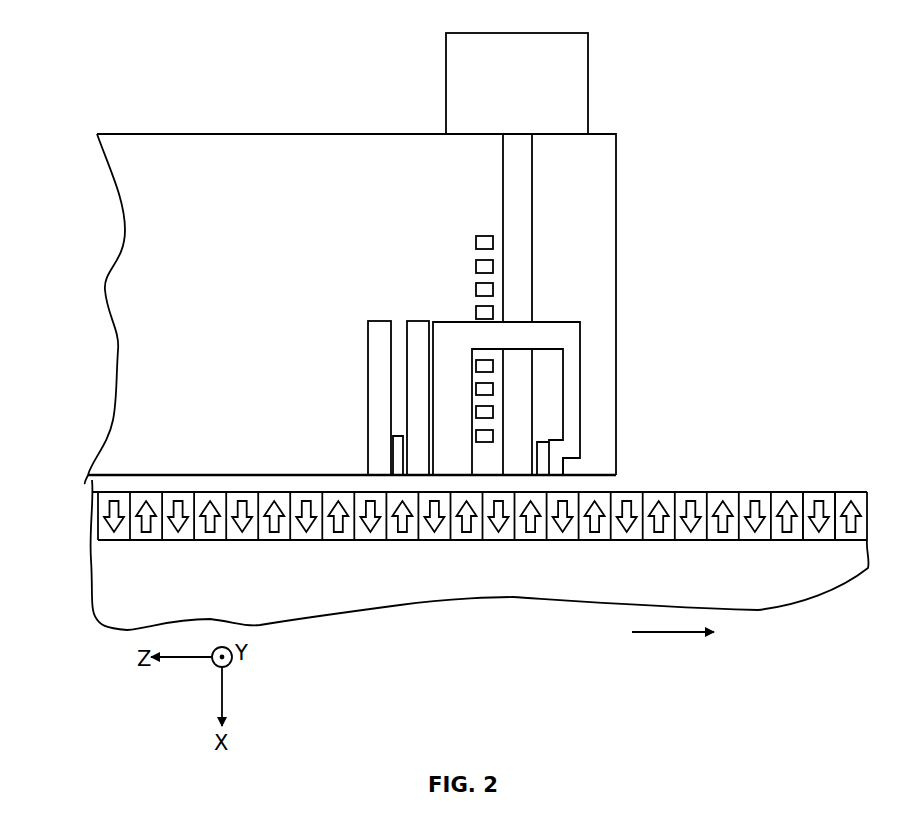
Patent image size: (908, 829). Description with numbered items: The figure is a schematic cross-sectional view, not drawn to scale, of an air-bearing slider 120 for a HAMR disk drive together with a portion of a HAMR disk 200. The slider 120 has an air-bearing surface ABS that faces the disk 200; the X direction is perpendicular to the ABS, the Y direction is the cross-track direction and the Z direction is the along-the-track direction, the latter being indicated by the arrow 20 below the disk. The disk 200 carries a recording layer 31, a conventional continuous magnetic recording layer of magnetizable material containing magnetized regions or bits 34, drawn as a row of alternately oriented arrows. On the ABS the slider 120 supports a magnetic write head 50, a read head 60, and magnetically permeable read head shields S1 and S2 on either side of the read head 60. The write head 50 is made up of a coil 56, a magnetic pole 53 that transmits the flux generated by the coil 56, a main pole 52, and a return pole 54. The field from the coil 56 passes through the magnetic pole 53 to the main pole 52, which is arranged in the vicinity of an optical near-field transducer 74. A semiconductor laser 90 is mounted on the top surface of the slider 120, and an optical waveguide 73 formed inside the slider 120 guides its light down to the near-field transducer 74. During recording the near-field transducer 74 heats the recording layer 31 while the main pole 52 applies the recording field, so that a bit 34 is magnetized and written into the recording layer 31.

The air-bearing slider 120 is at (127, 378).
The air-bearing surface ABS is at (598, 479).
The semiconductor laser 90 is at (577, 84).
The optical waveguide 73 is at (515, 270).
The magnetic pole 53 is at (570, 365).
The return pole 54 is at (451, 333).
The main pole 52 is at (559, 468).
The optical near-field transducer 74 is at (544, 441).
The coil 56 is at (474, 242).
The magnetic write head 50 is at (452, 268).
The read head shield S1 is at (378, 397).
The read head shield S2 is at (418, 320).
The read head 60 is at (392, 463).
The disk 200 is at (758, 598).
The recording layer 31 is at (72, 492).
The bit 34 is at (820, 498).
The direction of media motion 20 is at (658, 638).